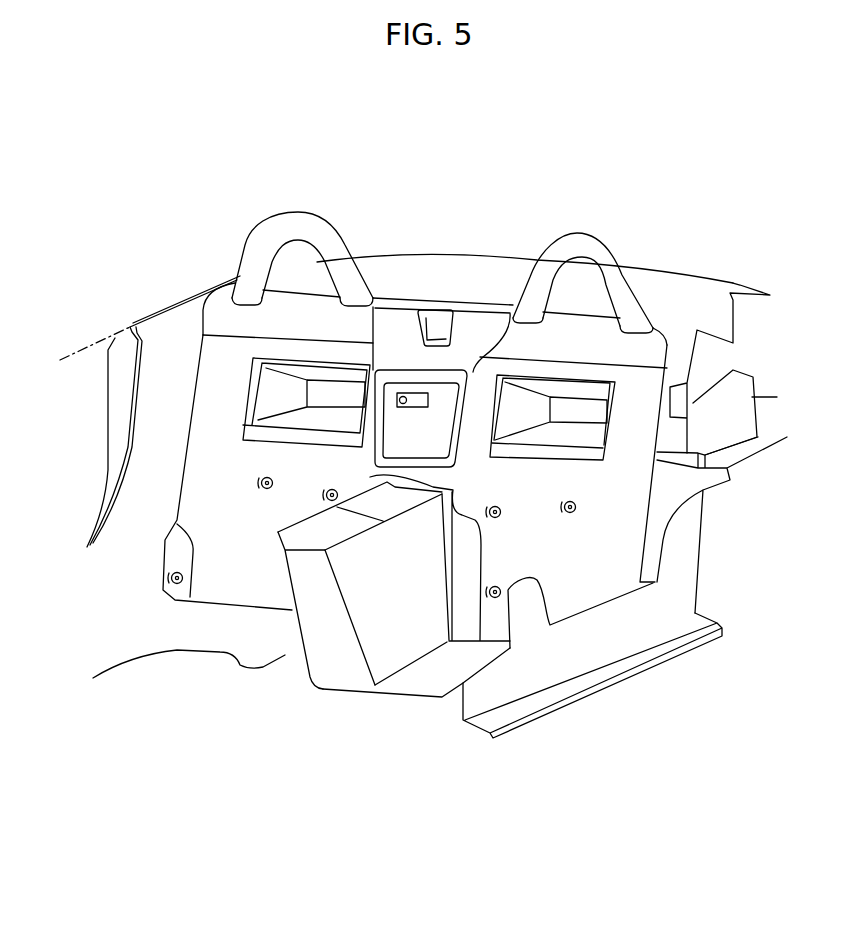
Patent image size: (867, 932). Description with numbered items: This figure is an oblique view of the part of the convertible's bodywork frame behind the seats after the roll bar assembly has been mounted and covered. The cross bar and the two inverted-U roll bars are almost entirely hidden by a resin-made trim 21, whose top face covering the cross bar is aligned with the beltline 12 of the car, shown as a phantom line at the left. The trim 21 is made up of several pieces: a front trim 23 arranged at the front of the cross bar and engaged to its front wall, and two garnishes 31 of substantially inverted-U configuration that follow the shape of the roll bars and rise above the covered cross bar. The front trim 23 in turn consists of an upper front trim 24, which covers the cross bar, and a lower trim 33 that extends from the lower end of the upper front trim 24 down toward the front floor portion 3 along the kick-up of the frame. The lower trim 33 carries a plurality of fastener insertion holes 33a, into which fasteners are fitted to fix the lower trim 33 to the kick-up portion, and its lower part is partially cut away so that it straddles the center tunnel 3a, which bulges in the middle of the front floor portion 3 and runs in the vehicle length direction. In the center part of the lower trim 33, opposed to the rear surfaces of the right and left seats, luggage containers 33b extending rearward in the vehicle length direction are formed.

The front floor portion 3 is at (499, 637).
The center tunnel 3a is at (310, 617).
The beltline 12 is at (90, 345).
The trim 21 is at (271, 166).
The front trim 23 is at (194, 198).
The upper front trim 24 is at (220, 317).
The garnish 31 is at (303, 220).
The lower trim 33 is at (220, 368).
The fastener insertion hole 33a is at (564, 507).
The luggage container 33b is at (552, 435).